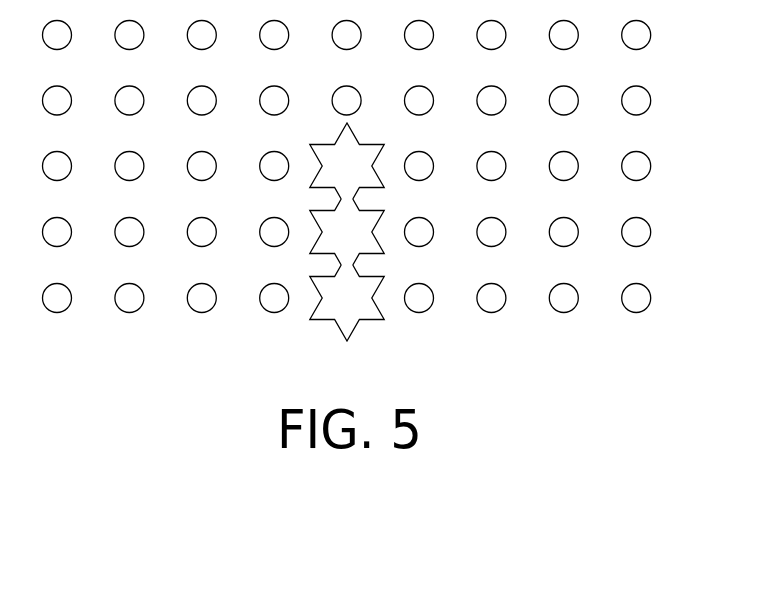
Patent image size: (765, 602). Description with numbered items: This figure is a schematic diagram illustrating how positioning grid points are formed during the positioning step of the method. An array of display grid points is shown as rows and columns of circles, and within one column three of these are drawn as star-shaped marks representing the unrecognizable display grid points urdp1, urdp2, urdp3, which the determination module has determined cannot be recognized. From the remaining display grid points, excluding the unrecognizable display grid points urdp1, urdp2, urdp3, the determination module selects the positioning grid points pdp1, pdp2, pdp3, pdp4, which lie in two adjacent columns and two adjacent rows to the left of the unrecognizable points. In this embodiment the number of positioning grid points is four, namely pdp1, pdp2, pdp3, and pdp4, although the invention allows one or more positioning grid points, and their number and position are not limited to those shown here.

The positioning grid point pdp1 is at (186, 300).
The positioning grid point pdp2 is at (259, 300).
The positioning grid point pdp3 is at (186, 234).
The positioning grid point pdp4 is at (259, 234).
The unrecognizable display grid point urdp1 is at (380, 144).
The unrecognizable display grid point urdp2 is at (380, 210).
The unrecognizable display grid point urdp3 is at (380, 277).